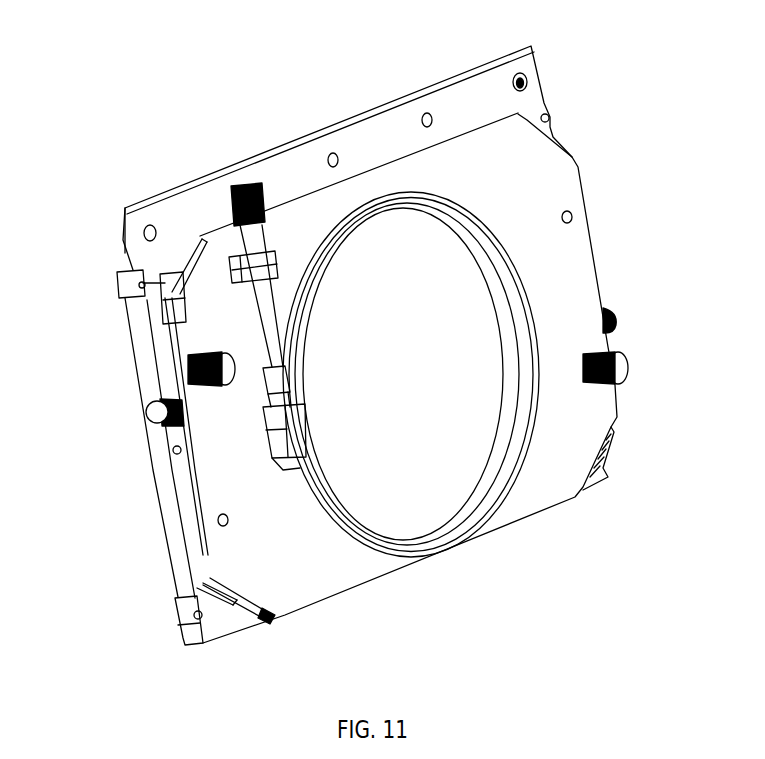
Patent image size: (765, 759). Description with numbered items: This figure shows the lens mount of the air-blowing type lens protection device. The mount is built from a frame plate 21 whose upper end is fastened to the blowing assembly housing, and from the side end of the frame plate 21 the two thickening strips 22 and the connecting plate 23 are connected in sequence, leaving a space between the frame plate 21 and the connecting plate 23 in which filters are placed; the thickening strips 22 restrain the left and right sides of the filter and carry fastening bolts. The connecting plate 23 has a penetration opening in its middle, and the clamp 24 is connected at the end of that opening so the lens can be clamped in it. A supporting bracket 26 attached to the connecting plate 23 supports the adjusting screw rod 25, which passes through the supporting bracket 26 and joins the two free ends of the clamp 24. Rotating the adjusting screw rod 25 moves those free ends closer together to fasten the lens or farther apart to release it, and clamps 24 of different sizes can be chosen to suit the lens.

The frame plate 21 is at (378, 135).
The thickening strips 22 is at (156, 347).
The connecting plate 23 is at (533, 209).
The clamp 24 is at (348, 532).
The adjusting screw rod 25 is at (270, 352).
The supporting bracket 26 is at (258, 266).